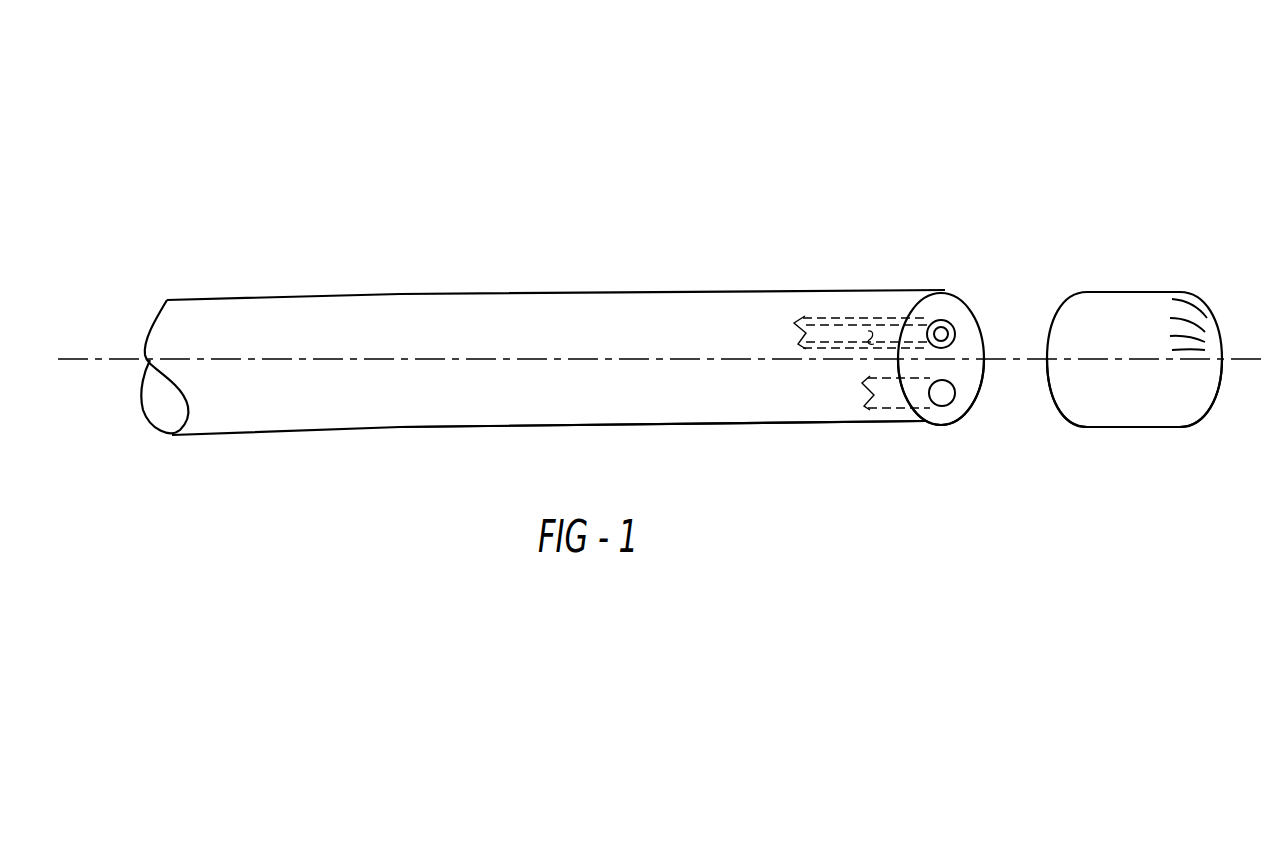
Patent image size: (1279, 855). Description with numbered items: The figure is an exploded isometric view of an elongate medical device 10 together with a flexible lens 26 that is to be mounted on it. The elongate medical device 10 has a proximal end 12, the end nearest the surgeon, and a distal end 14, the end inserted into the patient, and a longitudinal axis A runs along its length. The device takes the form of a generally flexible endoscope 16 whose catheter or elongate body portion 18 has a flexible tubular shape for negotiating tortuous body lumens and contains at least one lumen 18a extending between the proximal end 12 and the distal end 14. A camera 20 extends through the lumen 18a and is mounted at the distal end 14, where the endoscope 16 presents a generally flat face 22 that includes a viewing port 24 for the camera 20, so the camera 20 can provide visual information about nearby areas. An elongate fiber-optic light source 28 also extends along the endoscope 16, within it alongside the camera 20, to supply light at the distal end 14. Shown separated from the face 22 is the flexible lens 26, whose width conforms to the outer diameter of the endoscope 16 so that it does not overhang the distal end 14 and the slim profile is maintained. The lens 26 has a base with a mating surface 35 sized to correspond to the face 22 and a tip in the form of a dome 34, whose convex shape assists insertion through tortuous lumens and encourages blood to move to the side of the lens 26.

The elongate medical device 10 is at (440, 158).
The longitudinal axis A is at (72, 358).
The proximal end 12 is at (183, 300).
The distal end 14 is at (918, 291).
The flexible endoscope 16 is at (567, 290).
The elongate body portion 18 is at (475, 425).
The lumen 18a is at (873, 318).
The camera 20 is at (923, 327).
The viewing port 24 is at (953, 333).
The light source 28 is at (900, 407).
The face 22 is at (970, 410).
The flexible lens 26 is at (1133, 292).
The mating surface 35 is at (1053, 400).
The dome 34 is at (1195, 392).